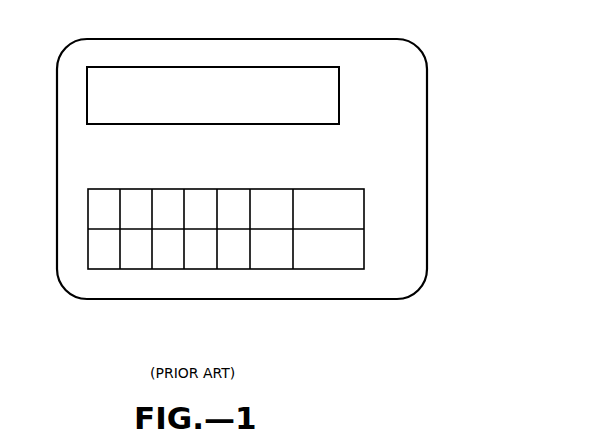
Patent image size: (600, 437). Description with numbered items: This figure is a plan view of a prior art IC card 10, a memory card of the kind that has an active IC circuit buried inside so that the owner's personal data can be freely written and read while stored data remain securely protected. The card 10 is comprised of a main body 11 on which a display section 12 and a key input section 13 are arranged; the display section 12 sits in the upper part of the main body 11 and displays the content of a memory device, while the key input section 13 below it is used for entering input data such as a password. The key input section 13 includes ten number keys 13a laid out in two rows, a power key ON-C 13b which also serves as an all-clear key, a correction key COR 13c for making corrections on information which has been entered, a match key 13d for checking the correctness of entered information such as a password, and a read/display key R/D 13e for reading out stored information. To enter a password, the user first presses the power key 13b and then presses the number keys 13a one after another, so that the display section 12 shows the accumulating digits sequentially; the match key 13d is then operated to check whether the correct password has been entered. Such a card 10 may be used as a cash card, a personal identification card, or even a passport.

The IC card 10 is at (448, 73).
The main body 11 is at (412, 207).
The display section 12 is at (307, 67).
The key input section 13 is at (110, 270).
The number keys 13a is at (235, 195).
The power key ON-C 13b is at (345, 258).
The correction key COR 13c is at (286, 253).
The match key 13d is at (355, 190).
The read/display key R/D 13e is at (283, 193).